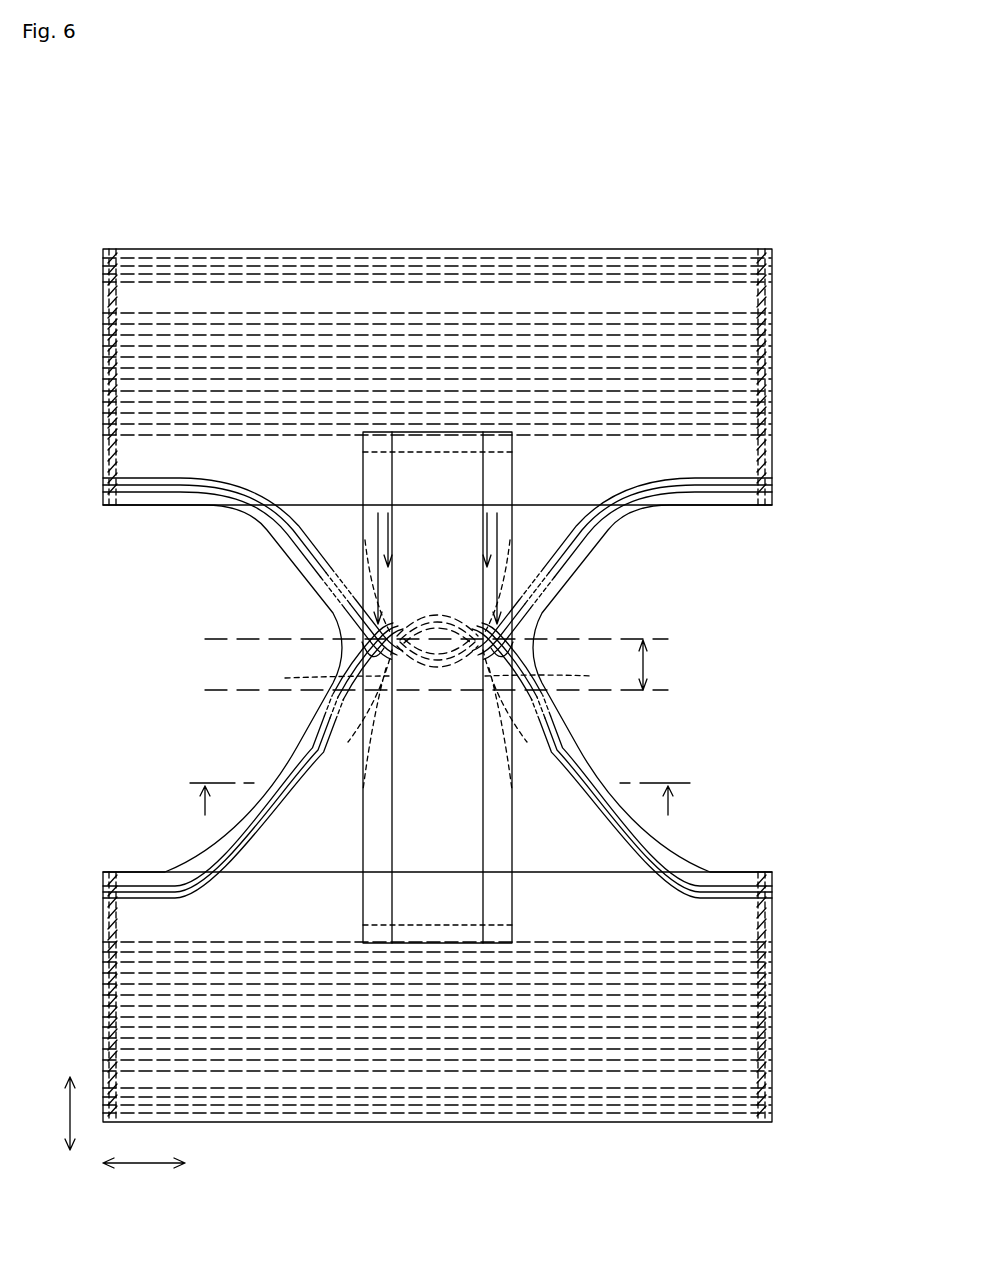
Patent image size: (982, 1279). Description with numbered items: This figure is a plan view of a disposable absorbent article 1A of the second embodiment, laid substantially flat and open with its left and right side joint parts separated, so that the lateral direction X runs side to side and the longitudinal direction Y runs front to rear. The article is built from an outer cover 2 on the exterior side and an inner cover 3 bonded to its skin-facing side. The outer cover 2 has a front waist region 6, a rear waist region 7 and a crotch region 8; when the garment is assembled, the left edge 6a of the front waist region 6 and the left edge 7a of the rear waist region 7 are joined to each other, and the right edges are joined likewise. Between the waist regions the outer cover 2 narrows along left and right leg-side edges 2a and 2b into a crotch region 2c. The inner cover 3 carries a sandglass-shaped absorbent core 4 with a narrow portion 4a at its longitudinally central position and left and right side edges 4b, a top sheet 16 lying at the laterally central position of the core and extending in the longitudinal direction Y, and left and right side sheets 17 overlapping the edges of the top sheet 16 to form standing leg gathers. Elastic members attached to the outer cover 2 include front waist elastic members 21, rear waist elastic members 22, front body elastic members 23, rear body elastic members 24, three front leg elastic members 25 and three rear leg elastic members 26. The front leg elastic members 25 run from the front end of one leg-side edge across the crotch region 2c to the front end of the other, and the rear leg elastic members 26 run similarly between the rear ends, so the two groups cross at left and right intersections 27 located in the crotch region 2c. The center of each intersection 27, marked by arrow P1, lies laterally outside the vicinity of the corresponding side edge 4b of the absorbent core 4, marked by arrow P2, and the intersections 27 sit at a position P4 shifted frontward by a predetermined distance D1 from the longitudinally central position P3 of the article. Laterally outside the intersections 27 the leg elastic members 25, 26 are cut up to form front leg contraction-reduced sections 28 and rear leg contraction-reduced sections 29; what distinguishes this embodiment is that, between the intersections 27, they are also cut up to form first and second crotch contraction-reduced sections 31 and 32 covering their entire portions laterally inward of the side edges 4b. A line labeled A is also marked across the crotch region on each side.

The absorbent article 1A is at (98, 200).
The outer cover 2 is at (243, 238).
The leg-side edge 2a is at (293, 553).
The leg-side edge 2b is at (582, 553).
The crotch region 2c is at (430, 676).
The inner cover 3 is at (526, 486).
The absorbent core 4 is at (500, 712).
The narrow portion 4a is at (513, 722).
The side edge 4b is at (435, 675).
The front waist region 6 is at (785, 500).
The left edge 6a is at (104, 292).
The rear waist region 7 is at (785, 872).
The left edge 7a is at (104, 960).
The crotch region 8 is at (785, 510).
The top sheet 16 is at (472, 838).
The side sheet 17 is at (385, 888).
The front waist elastic member 21 is at (443, 248).
The rear waist elastic member 22 is at (473, 1122).
The front body elastic member 23 is at (572, 312).
The rear body elastic member 24 is at (537, 1072).
The front leg elastic member 25 is at (197, 493).
The rear leg elastic member 26 is at (180, 878).
The intersection 27 is at (365, 656).
The front leg contraction-reduced section 28 is at (333, 593).
The rear leg contraction-reduced section 29 is at (333, 705).
The first crotch contraction-reduced section 31 is at (450, 665).
The second crotch contraction-reduced section 32 is at (441, 620).
The arrow indicating center of intersection P1 is at (376, 520).
The arrow indicating side edge of absorbent core P2 is at (390, 527).
The longitudinally central position P3 is at (653, 695).
The position of intersections P4 is at (653, 635).
The predetermined distance D1 is at (656, 665).
The section line A- A is at (436, 794).
The lateral direction X is at (144, 1175).
The longitudinal direction Y is at (60, 1113).